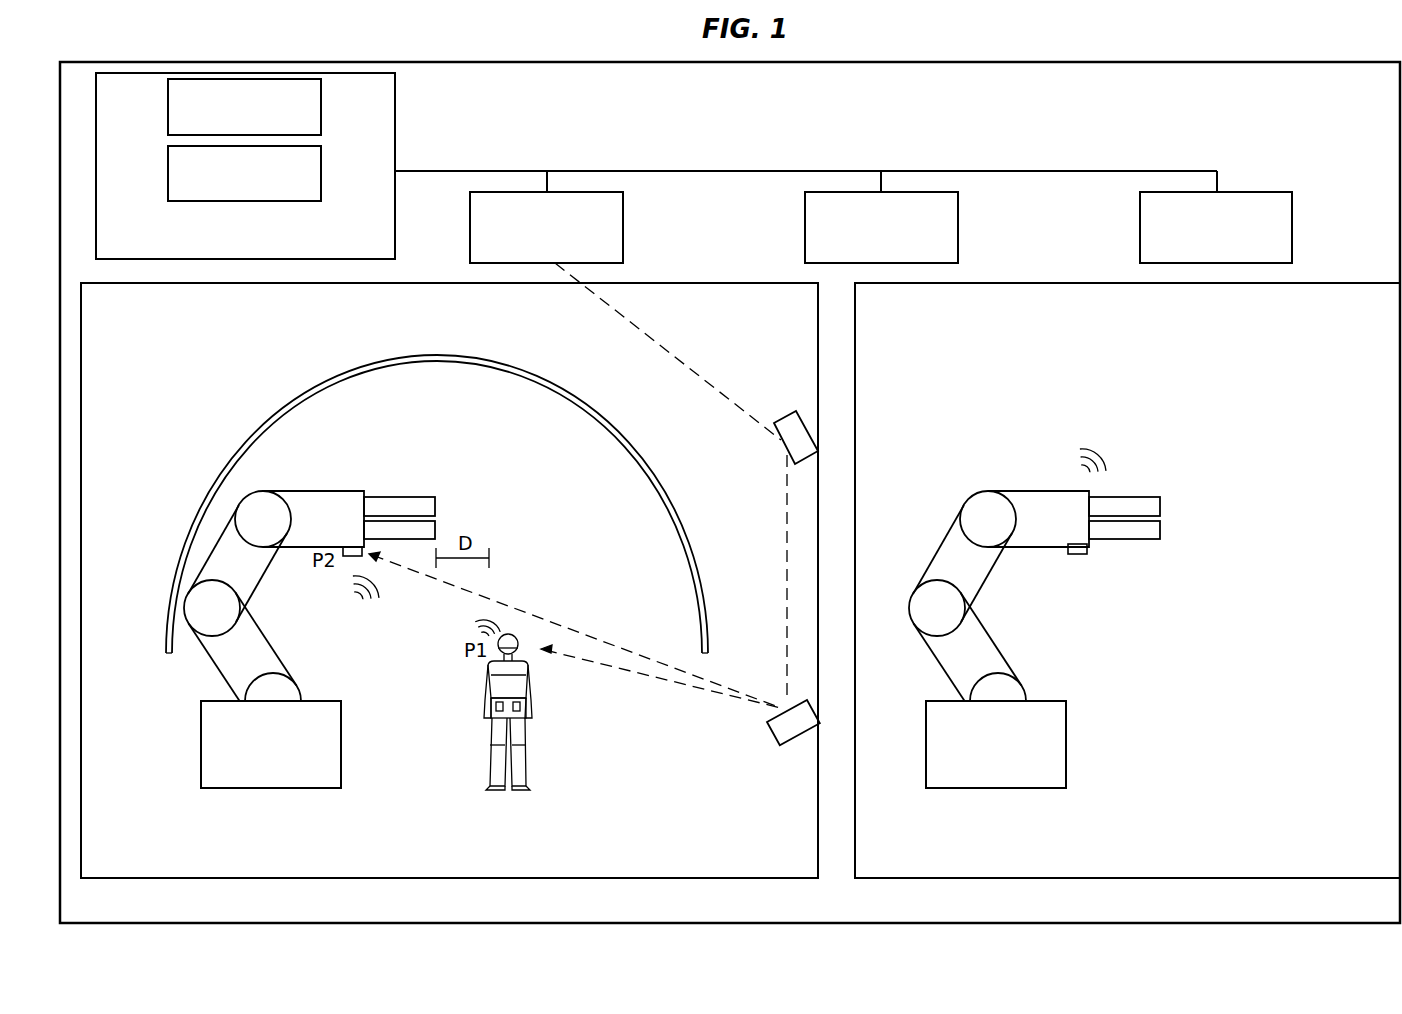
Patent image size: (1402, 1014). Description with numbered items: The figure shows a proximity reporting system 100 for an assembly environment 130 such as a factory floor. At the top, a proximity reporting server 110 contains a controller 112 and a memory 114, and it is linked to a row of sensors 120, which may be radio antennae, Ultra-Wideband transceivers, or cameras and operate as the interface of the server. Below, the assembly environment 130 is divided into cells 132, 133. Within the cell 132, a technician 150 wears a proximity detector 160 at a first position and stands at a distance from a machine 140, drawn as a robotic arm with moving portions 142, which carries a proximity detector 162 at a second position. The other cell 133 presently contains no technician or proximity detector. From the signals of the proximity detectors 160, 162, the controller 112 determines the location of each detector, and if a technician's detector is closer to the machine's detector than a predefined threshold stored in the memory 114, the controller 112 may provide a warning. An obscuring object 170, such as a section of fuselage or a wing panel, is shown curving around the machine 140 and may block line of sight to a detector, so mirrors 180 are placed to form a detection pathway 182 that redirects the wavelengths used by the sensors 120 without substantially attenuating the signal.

The proximity reporting system 100 is at (1299, 109).
The proximity reporting server 110 is at (262, 252).
The controller 112 is at (262, 127).
The memory 114 is at (262, 197).
The sensors 120 is at (1232, 252).
The assembly environment 130 is at (888, 914).
The cell 132 is at (490, 869).
The cell 133 is at (1180, 869).
The machine 140 is at (1012, 771).
The portions of machine 142 is at (325, 491).
The technician 150 is at (529, 679).
The proximity detector 160 is at (518, 638).
The proximity detector 162 is at (345, 557).
The obscuring object 170 is at (549, 380).
The mirrors 180 is at (788, 412).
The detection pathway 182 is at (661, 680).